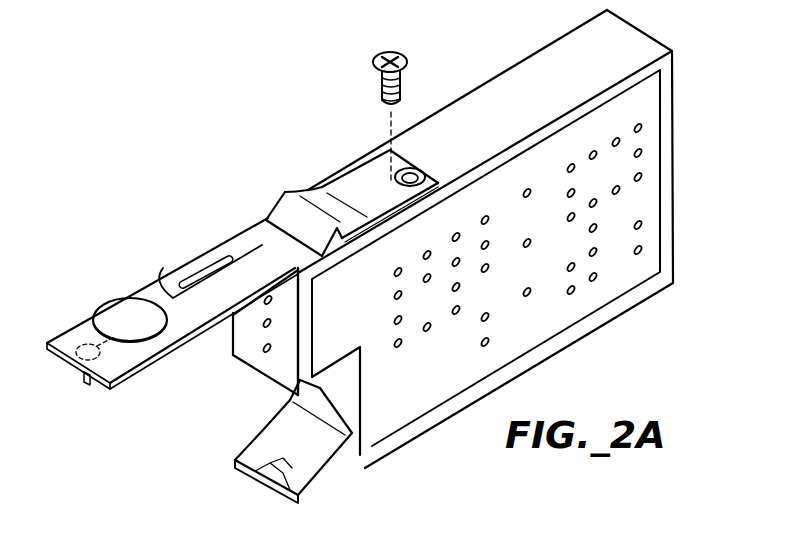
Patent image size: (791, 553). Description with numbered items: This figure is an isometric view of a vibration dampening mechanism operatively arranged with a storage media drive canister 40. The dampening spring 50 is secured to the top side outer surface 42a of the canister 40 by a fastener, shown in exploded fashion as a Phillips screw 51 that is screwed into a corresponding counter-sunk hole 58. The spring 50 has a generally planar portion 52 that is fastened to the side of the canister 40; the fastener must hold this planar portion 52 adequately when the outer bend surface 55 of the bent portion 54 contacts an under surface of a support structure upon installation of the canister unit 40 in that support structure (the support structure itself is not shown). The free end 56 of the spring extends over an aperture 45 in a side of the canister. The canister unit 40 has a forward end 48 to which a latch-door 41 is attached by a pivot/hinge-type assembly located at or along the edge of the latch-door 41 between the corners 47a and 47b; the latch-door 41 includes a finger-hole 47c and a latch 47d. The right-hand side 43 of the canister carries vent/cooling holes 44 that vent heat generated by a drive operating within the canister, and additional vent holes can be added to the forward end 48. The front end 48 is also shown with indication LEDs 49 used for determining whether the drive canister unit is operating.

The storage media drive canister 40 is at (518, 58).
The latch-door 41 is at (152, 282).
The top side outer surface 42a is at (632, 47).
The right-hand side 43 is at (415, 414).
The vent/cooling holes 44 is at (530, 248).
The aperture 45 is at (322, 268).
The corner 47a is at (229, 226).
The corner 47b is at (233, 353).
The finger-hole 47c is at (118, 320).
The latch 47d is at (84, 380).
The forward end 48 is at (276, 372).
The indication LEDs 49 is at (289, 294).
The dampening spring 50 is at (338, 167).
The Phillips screw 51 is at (372, 63).
The generally planar portion 52 is at (378, 168).
The bent portion 54 is at (297, 174).
The outer bend surface 55 is at (281, 186).
The free end 56 is at (272, 213).
The counter-sunk hole 58 is at (412, 170).